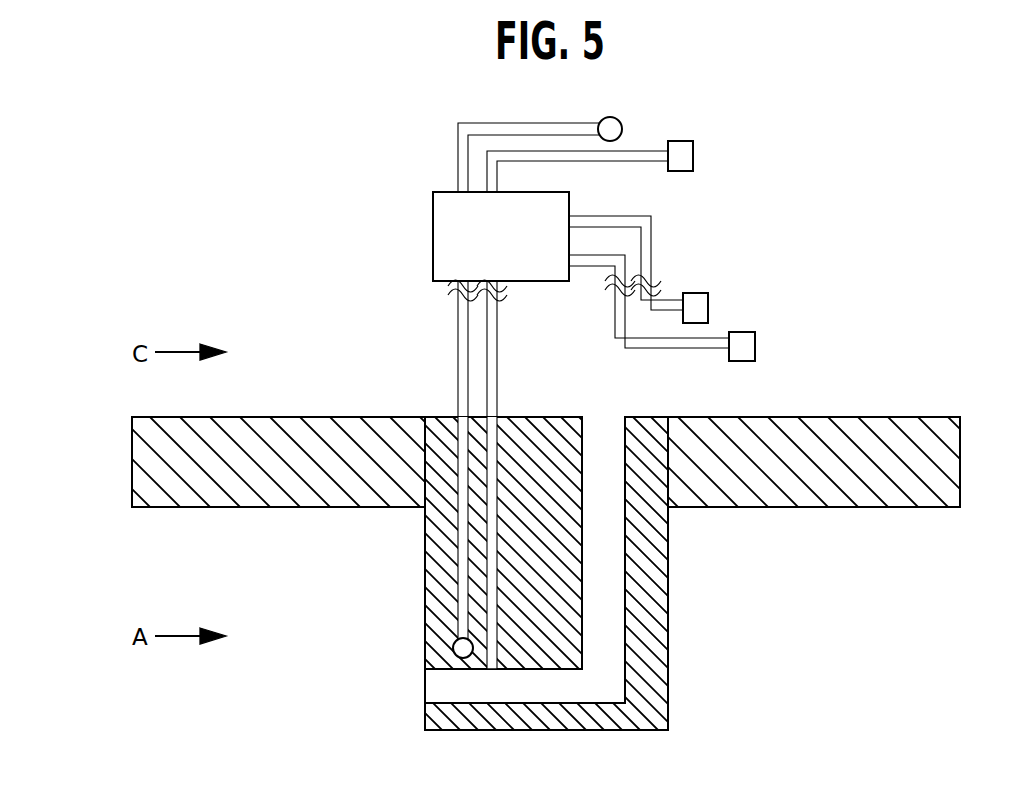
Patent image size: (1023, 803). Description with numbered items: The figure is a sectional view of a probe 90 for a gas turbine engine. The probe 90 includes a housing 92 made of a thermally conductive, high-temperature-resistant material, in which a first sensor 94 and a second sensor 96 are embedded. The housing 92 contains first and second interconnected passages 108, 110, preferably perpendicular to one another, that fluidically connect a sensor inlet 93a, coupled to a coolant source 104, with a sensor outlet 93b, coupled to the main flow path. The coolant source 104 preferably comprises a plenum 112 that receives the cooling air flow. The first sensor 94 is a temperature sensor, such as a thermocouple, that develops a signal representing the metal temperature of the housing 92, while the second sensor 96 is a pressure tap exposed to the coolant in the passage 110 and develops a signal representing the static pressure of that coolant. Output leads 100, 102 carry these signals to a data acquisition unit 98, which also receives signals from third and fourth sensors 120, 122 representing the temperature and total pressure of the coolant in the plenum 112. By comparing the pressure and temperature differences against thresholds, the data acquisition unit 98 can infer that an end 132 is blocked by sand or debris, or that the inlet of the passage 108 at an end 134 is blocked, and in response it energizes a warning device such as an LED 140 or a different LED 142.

The probe 90 is at (665, 613).
The housing 92 is at (425, 563).
The sensor inlet 93a is at (608, 450).
The sensor outlet 93b is at (426, 685).
The first sensor 94 is at (455, 648).
The second sensor 96 is at (492, 668).
The data acquisition unit 98 is at (489, 249).
The output lead 100 is at (458, 302).
The output lead 102 is at (495, 320).
The coolant source 104 is at (733, 387).
The first passage 108 is at (618, 437).
The second passage 110 is at (438, 694).
The plenum 112 is at (830, 303).
The third sensor 120 is at (697, 303).
The fourth sensor 122 is at (747, 343).
The end 132 is at (428, 676).
The end 134 is at (593, 428).
The LED 140 is at (607, 118).
The LED 142 is at (687, 157).